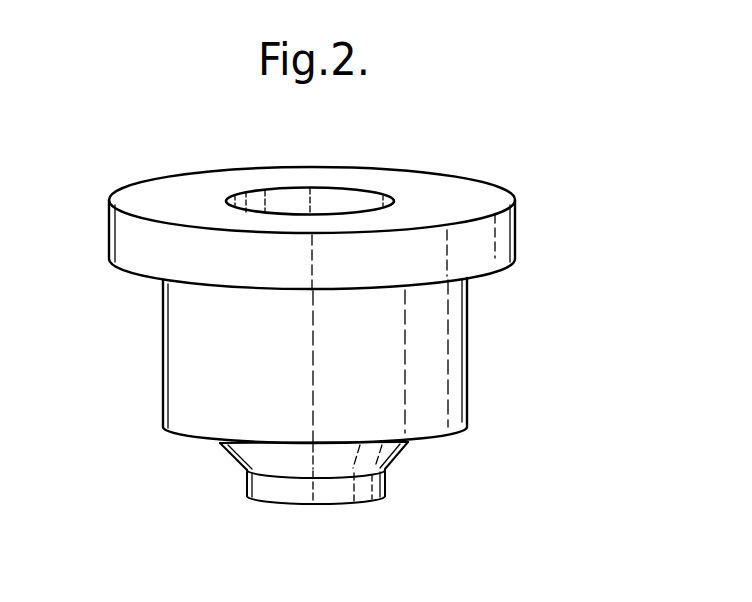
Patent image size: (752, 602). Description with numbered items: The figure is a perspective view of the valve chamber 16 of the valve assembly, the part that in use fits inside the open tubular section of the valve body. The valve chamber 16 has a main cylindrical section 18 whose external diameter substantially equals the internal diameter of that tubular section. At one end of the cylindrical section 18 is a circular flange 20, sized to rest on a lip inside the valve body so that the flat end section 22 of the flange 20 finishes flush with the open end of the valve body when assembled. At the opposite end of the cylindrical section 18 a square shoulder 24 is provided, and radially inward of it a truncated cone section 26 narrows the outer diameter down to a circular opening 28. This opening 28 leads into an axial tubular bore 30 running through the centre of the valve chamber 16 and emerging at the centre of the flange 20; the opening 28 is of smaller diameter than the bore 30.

The valve chamber 16 is at (371, 342).
The main cylindrical section 18 is at (435, 315).
The circular flange 20 is at (299, 217).
The flat end section 22 is at (440, 192).
The square shoulder 24 is at (170, 432).
The truncated cone section 26 is at (395, 455).
The circular opening 28 is at (328, 503).
The axial tubular bore 30 is at (297, 195).